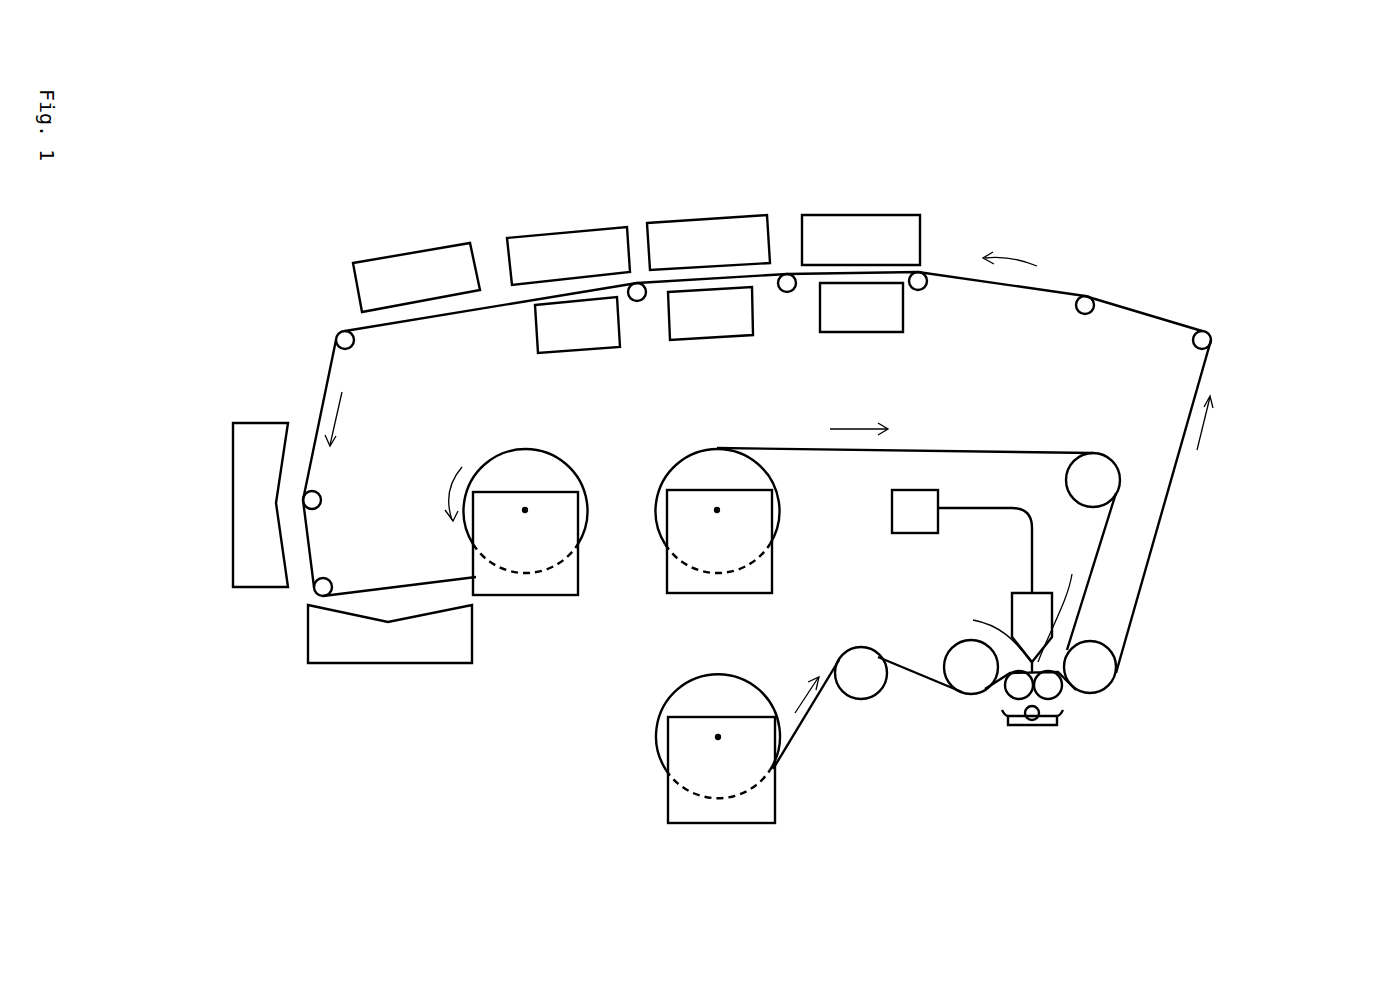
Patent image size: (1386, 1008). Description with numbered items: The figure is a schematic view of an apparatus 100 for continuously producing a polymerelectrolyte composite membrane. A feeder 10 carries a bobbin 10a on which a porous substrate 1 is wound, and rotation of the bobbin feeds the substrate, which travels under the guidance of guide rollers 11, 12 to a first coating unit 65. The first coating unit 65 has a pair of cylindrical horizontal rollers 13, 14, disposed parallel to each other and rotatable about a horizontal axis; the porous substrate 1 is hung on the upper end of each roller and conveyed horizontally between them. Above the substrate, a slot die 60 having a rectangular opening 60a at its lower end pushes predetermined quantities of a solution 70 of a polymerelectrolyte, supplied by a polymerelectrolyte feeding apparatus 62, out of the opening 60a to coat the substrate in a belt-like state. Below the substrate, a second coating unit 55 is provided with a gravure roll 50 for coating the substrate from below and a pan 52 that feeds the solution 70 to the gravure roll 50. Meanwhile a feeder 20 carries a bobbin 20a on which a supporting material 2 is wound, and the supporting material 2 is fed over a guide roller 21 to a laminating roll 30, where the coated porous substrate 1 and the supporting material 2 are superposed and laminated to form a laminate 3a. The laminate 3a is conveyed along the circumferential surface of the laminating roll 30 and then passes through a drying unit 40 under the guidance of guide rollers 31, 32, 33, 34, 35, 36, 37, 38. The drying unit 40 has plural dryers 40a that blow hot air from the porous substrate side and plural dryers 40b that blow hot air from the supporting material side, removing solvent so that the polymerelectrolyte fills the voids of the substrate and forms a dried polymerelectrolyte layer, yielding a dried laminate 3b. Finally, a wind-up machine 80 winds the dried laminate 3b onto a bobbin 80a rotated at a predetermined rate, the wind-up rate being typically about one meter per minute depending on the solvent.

The porous substrate 1 is at (897, 660).
The supporting material 2 is at (953, 450).
The laminate 3a is at (1210, 365).
The dried laminate 3b is at (470, 577).
The feeder 10 is at (775, 800).
The bobbin 10a is at (680, 683).
The guide roller 11 is at (857, 698).
The guide roller 12 is at (960, 642).
The horizontal roller 13 is at (1002, 694).
The horizontal roller 14 is at (1065, 695).
The feeder 20 is at (772, 582).
The bobbin 20a is at (667, 467).
The guide roller 21 is at (1067, 484).
The laminating roll 30 is at (1107, 649).
The guide roller 31 is at (1193, 346).
The guide roller 32 is at (1085, 314).
The guide roller 33 is at (919, 290).
The guide roller 34 is at (787, 292).
The guide roller 35 is at (637, 301).
The guide roller 36 is at (354, 346).
The guide roller 37 is at (322, 498).
The guide roller 38 is at (333, 584).
The drying unit 40 is at (236, 214).
The dryer 40a is at (432, 248).
The dryer 40b is at (577, 351).
The gravure roll 50 is at (1030, 727).
The pan 52 is at (1003, 727).
The second coating unit 55 is at (1078, 783).
The slot die 60 is at (1017, 592).
The opening 60a is at (995, 628).
The polymerelectrolyte feeding apparatus 62 is at (910, 489).
The first coating unit 65 is at (971, 582).
The solution of a polymerelectrolyte 70 is at (1061, 605).
The wind-up machine 80 is at (528, 597).
The bobbin 80a is at (484, 462).
The apparatus for continuously producing 100 is at (1246, 756).